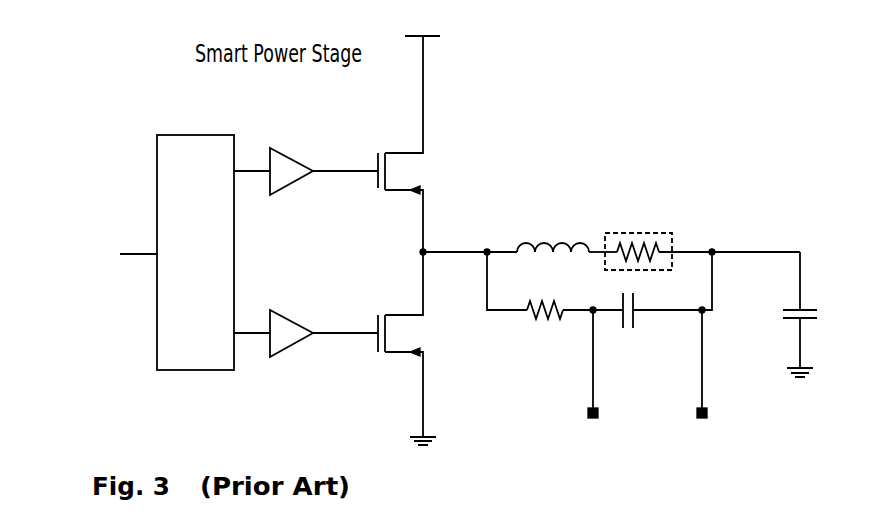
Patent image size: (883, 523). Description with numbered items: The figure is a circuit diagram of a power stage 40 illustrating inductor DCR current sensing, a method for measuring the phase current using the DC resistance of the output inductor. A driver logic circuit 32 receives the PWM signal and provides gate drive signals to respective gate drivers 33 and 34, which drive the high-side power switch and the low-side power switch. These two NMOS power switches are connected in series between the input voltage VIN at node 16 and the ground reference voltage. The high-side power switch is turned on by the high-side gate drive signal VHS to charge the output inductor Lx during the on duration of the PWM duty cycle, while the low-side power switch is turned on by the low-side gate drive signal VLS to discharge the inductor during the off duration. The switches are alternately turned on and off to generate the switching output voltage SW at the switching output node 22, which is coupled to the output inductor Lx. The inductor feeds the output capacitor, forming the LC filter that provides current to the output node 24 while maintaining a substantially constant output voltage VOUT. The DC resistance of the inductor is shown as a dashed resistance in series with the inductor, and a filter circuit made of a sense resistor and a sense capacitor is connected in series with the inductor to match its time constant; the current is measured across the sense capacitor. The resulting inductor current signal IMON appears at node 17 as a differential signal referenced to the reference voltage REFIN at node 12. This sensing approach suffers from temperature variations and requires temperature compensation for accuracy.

The power stage 40 is at (551, 34).
The input voltage node 16 is at (432, 38).
The driver logic circuit 32 is at (195, 252).
The gate driver 33 is at (292, 159).
The gate driver 34 is at (292, 321).
The switching output node 22 is at (449, 251).
The output node 24 is at (790, 252).
The IMON node 17 is at (596, 361).
The reference voltage node 12 is at (705, 361).